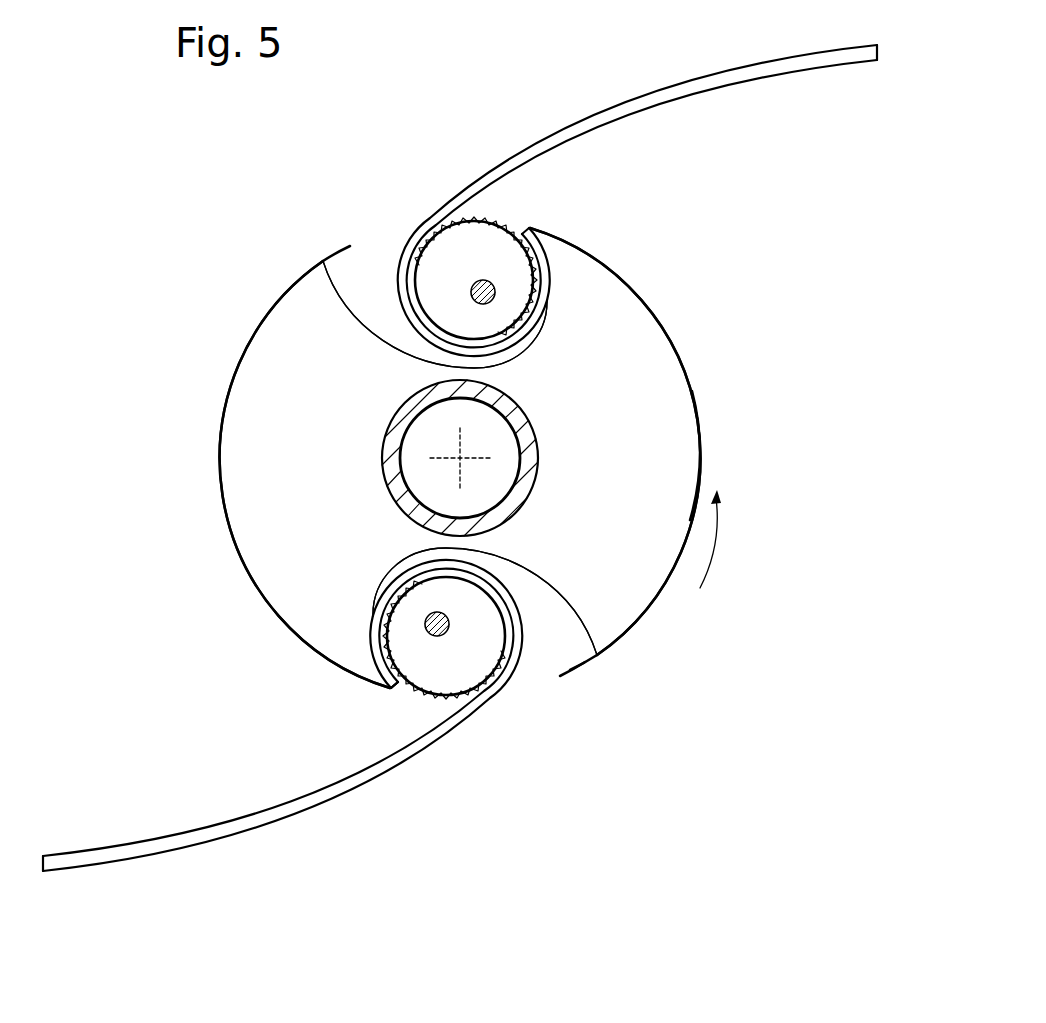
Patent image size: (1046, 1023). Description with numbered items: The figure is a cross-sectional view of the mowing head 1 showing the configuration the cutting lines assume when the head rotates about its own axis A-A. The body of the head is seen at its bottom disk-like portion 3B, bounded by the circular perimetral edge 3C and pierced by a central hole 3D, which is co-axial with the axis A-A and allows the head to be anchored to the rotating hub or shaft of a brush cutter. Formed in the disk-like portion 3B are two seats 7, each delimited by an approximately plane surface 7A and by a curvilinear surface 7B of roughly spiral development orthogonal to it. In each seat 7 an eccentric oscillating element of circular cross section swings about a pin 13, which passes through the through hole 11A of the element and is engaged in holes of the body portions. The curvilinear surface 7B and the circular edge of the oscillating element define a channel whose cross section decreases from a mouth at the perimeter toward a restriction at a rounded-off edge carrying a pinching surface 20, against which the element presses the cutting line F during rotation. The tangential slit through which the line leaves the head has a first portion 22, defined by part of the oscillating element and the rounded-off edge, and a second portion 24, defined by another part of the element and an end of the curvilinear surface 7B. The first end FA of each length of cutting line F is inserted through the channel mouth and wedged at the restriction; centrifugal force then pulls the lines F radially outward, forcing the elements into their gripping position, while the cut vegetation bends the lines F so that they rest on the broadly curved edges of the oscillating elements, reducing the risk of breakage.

The mowing head 1 is at (214, 346).
The disk-like portion 3B is at (627, 327).
The perimetral edge 3C is at (702, 396).
The central hole 3D is at (487, 496).
The seat 7 is at (378, 256).
The plane surface 7A is at (347, 270).
The curvilinear surface 7B is at (372, 306).
The through hole 11A is at (488, 215).
The pin 13 is at (479, 284).
The pinching surface 20 is at (378, 670).
The first portion 22 is at (400, 688).
The second portion 24 is at (573, 666).
The cutting line F is at (685, 83).
The first end of cutting line FA is at (521, 223).
The axis of rotation A-A is at (468, 456).